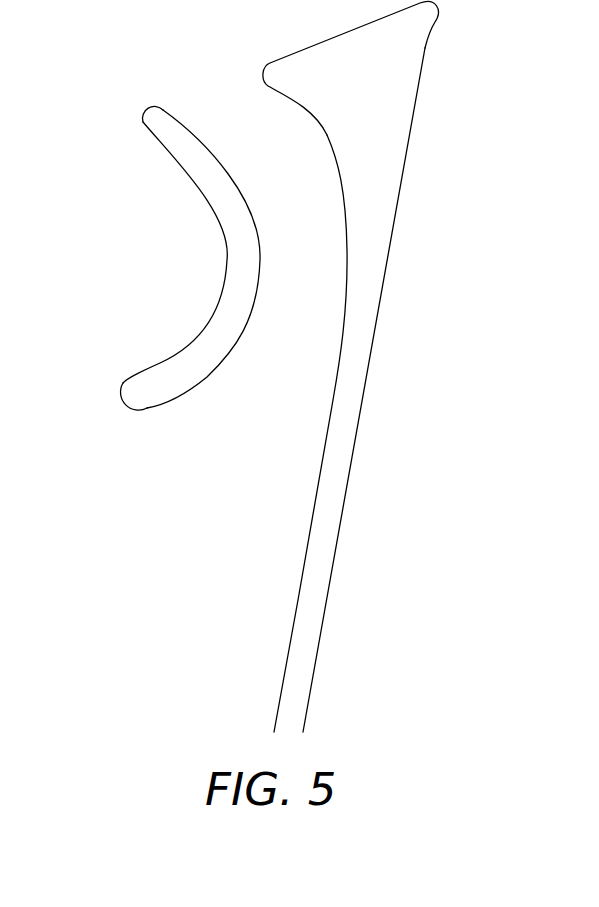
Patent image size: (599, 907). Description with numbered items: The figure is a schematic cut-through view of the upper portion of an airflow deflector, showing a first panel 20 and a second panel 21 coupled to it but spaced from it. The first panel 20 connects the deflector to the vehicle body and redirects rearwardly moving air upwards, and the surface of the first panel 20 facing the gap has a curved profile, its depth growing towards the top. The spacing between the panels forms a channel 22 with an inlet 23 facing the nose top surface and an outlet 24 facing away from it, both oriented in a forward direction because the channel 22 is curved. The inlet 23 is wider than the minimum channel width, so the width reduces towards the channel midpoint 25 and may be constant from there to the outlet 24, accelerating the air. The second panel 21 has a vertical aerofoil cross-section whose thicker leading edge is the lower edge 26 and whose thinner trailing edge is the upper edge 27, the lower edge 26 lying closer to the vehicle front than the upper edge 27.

The first panel 20 is at (368, 366).
The second panel 21 is at (165, 258).
The channel 22 is at (300, 153).
The inlet 23 is at (243, 436).
The outlet 24 is at (192, 77).
The channel midpoint 25 is at (326, 250).
The lower edge 26 is at (120, 400).
The upper edge 27 is at (147, 110).